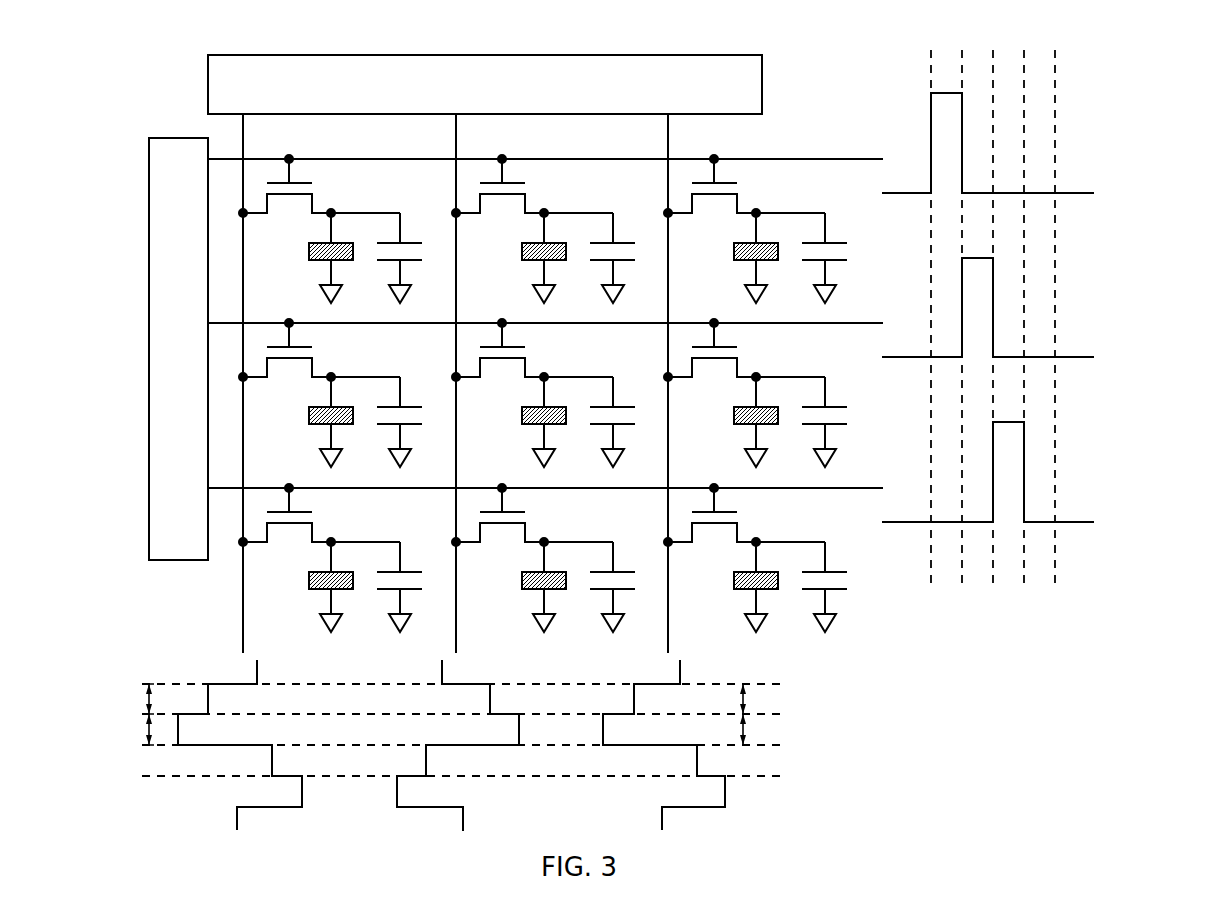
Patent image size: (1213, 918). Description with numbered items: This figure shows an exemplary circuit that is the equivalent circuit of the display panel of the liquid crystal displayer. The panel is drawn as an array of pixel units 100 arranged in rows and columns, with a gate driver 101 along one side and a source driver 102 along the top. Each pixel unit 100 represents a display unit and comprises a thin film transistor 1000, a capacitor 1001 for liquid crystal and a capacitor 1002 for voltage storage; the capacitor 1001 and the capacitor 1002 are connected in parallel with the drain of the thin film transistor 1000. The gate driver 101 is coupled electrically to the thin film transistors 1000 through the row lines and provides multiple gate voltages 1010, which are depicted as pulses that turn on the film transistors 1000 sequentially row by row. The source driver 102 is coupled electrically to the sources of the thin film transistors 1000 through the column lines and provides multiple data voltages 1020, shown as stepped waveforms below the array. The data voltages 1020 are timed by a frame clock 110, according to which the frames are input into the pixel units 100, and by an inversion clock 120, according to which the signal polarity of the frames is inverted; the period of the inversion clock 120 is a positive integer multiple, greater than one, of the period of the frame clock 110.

The pixel unit 100 is at (570, 416).
The gate driver 101 is at (160, 160).
The source driver 102 is at (222, 77).
The frame clock 110 is at (148, 698).
The inversion clock 120 is at (745, 716).
The thin film transistor 1000 is at (714, 527).
The capacitor for liquid crystal 1001 is at (741, 590).
The capacitor for voltage storage 1002 is at (850, 582).
The gate voltage 1010 is at (1080, 161).
The data voltage 1020 is at (215, 796).